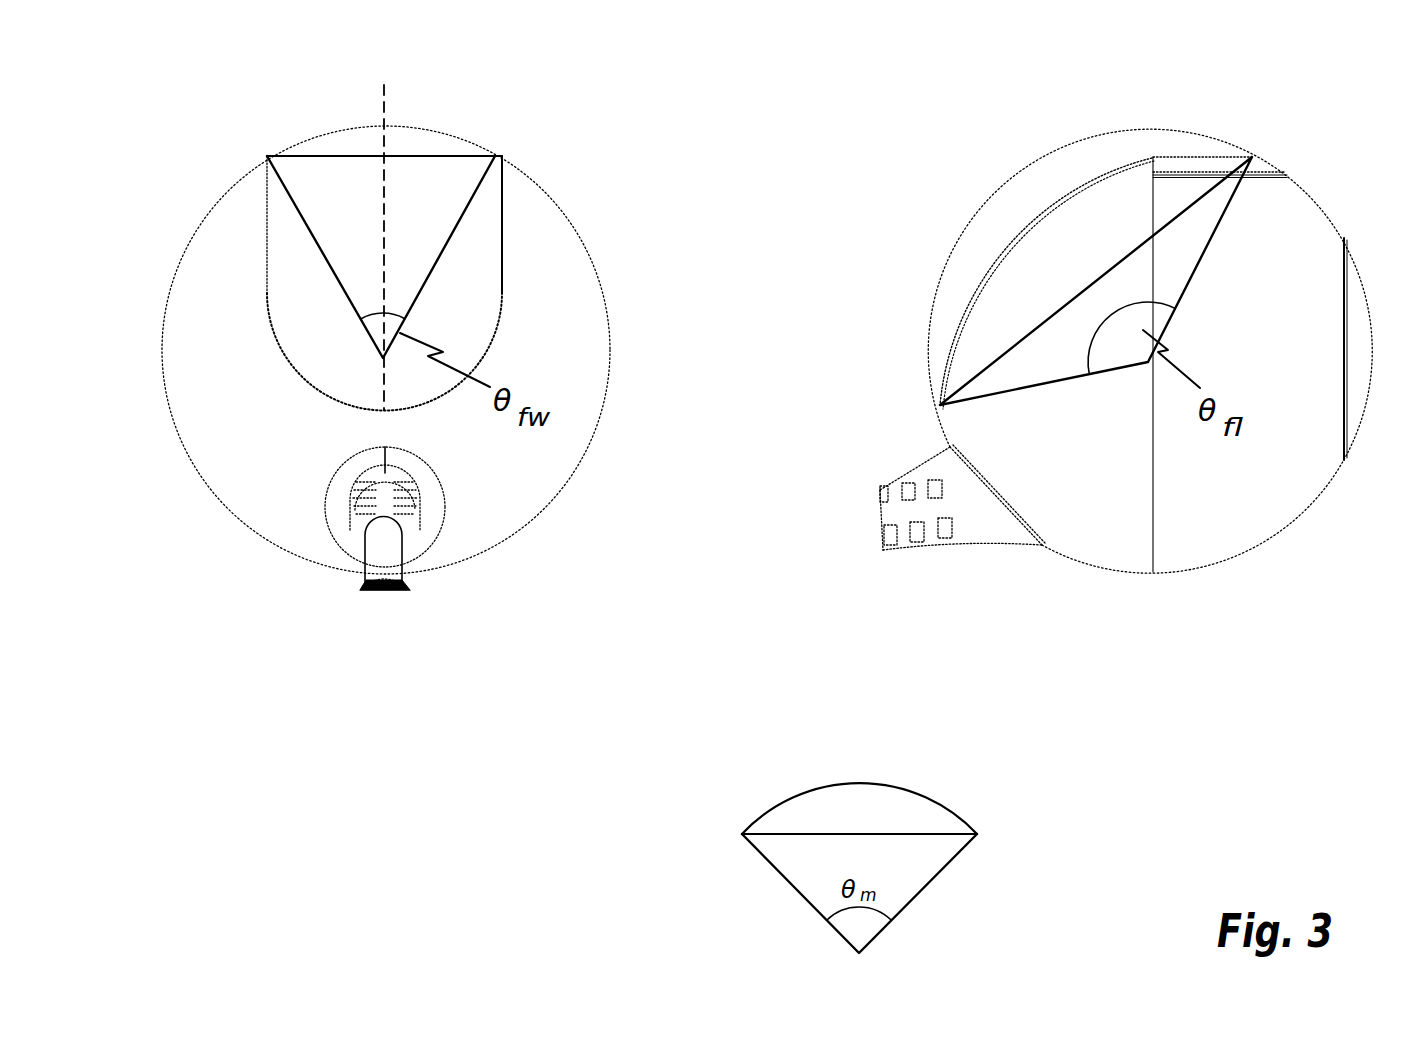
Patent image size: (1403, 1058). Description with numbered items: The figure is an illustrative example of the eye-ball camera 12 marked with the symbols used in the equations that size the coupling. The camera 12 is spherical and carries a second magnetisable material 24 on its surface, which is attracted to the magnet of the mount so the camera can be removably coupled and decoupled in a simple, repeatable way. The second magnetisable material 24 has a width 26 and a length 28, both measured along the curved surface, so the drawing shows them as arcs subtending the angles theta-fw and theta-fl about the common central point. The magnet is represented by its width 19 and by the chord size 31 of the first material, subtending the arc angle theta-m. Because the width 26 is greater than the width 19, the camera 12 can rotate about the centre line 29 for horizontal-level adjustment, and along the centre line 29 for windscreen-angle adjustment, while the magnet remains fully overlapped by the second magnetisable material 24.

The eye-ball camera 12 is at (767, 368).
The width of the magnet 19 is at (859, 738).
The second magnetisable material 24 is at (742, 516).
The width of the second magnetisable material 26 is at (526, 165).
The length of the second magnetisable material 28 is at (983, 283).
The centre line 29 is at (386, 224).
The chord size of first material 31 is at (902, 769).